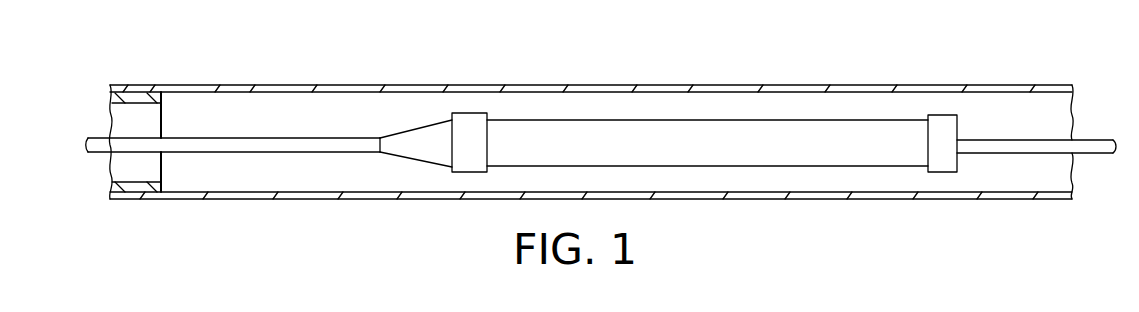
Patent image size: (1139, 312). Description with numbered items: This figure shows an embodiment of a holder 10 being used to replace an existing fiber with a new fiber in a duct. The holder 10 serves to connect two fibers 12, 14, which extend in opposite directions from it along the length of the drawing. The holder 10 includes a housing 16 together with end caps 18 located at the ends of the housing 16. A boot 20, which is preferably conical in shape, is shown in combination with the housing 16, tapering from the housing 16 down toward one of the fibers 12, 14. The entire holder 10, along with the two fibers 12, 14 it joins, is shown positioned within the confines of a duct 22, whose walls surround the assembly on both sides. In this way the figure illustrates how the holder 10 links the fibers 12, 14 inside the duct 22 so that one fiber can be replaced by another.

The holder 10 is at (630, 104).
The fiber 12 is at (307, 138).
The fiber 14 is at (1003, 148).
The housing 16 is at (764, 120).
The end caps 18 is at (475, 127).
The boot 20 is at (413, 134).
The duct 22 is at (264, 85).